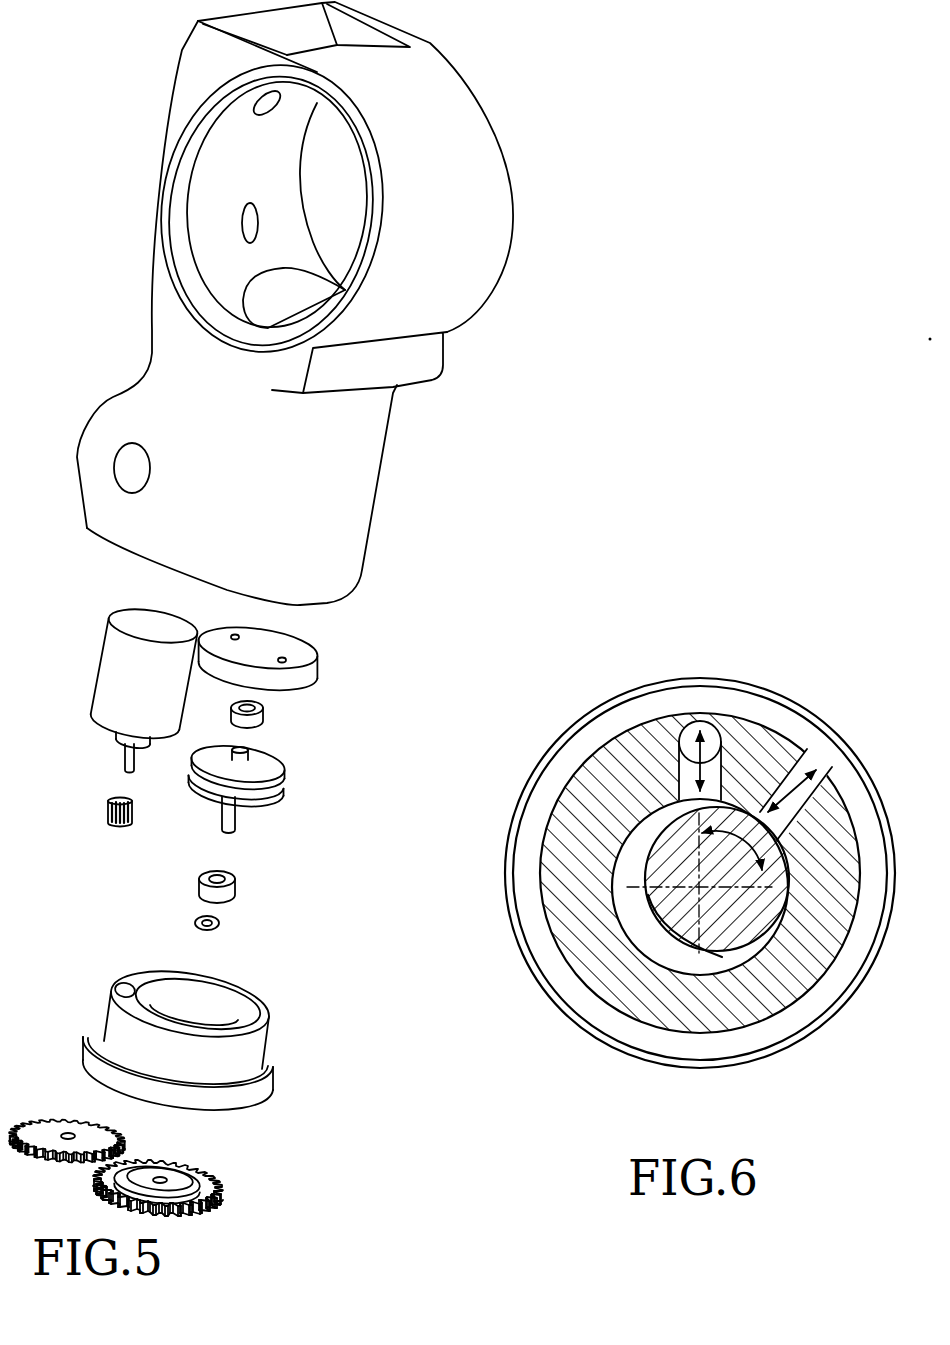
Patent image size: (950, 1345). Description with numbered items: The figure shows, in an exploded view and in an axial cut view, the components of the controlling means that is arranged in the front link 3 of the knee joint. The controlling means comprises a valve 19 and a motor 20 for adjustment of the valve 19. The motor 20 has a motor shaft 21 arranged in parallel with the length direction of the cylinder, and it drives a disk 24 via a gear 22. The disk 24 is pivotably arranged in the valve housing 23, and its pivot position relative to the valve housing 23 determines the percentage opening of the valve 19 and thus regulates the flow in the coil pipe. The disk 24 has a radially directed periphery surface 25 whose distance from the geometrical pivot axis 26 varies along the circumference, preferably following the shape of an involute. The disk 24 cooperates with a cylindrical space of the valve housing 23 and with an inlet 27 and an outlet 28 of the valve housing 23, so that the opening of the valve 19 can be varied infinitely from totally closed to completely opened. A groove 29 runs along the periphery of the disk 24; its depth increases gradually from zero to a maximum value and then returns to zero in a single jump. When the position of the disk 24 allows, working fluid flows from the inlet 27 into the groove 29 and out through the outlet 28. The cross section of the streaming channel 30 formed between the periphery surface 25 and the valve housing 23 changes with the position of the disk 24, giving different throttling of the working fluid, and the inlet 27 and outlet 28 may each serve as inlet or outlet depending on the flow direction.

In FIG. 5, the front link 3 is at (455, 100).
In FIG. 6, the valve 19 is at (797, 673).
In FIG. 5, the motor 20 is at (117, 660).
In FIG. 5, the motor shaft 21 is at (127, 758).
In FIG. 5, the gear 22 is at (180, 1134).
In FIG. 5, the valve housing 23 is at (120, 1020).
In FIG. 6, the valve housing 23 is at (682, 1003).
In FIG. 5, the disk 24 is at (265, 768).
In FIG. 6, the disk 24 is at (755, 917).
In FIG. 5, the periphery surface 25 is at (290, 787).
In FIG. 6, the periphery surface 25 is at (726, 962).
In FIG. 6, the geometrical pivot axis 26 is at (660, 922).
In FIG. 6, the inlet 27 is at (678, 740).
In FIG. 6, the outlet 28 is at (822, 788).
In FIG. 5, the groove 29 is at (183, 765).
In FIG. 6, the groove 29 is at (625, 857).
In FIG. 6, the streaming channel 30 is at (658, 953).